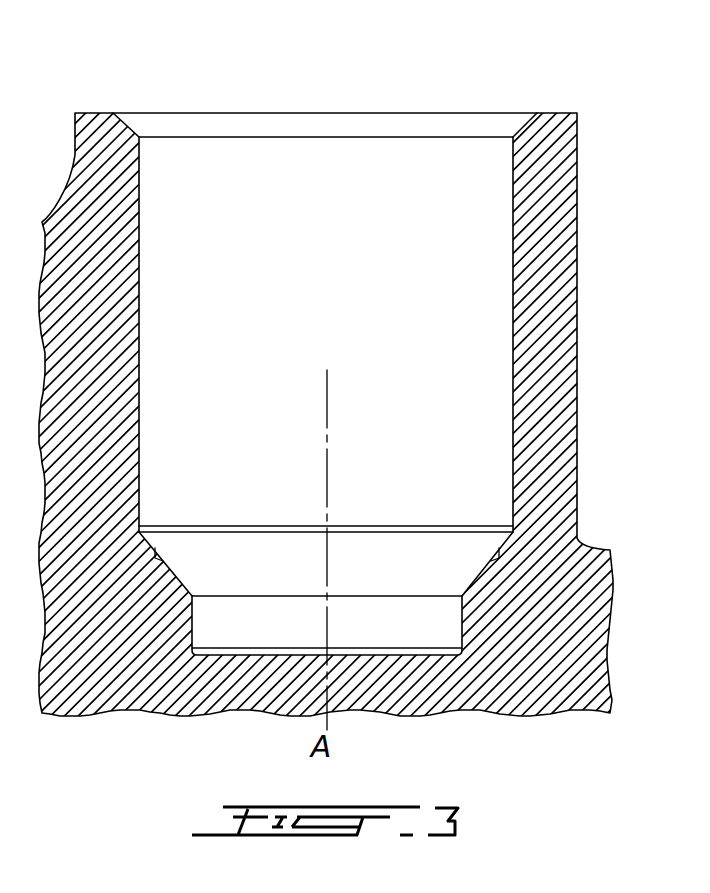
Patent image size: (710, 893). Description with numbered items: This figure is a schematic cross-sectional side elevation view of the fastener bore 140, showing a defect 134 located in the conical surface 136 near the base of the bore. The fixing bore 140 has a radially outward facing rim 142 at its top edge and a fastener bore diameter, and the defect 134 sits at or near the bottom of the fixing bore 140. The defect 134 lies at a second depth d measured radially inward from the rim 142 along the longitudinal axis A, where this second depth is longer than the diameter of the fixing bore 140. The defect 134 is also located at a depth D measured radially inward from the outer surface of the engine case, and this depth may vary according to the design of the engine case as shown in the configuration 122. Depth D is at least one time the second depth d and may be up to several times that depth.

The rim 142 is at (557, 110).
The engine case design 122 is at (325, 421).
The fastener bore 140 is at (452, 486).
The conical surface 136 is at (508, 538).
The defect 134 is at (495, 553).